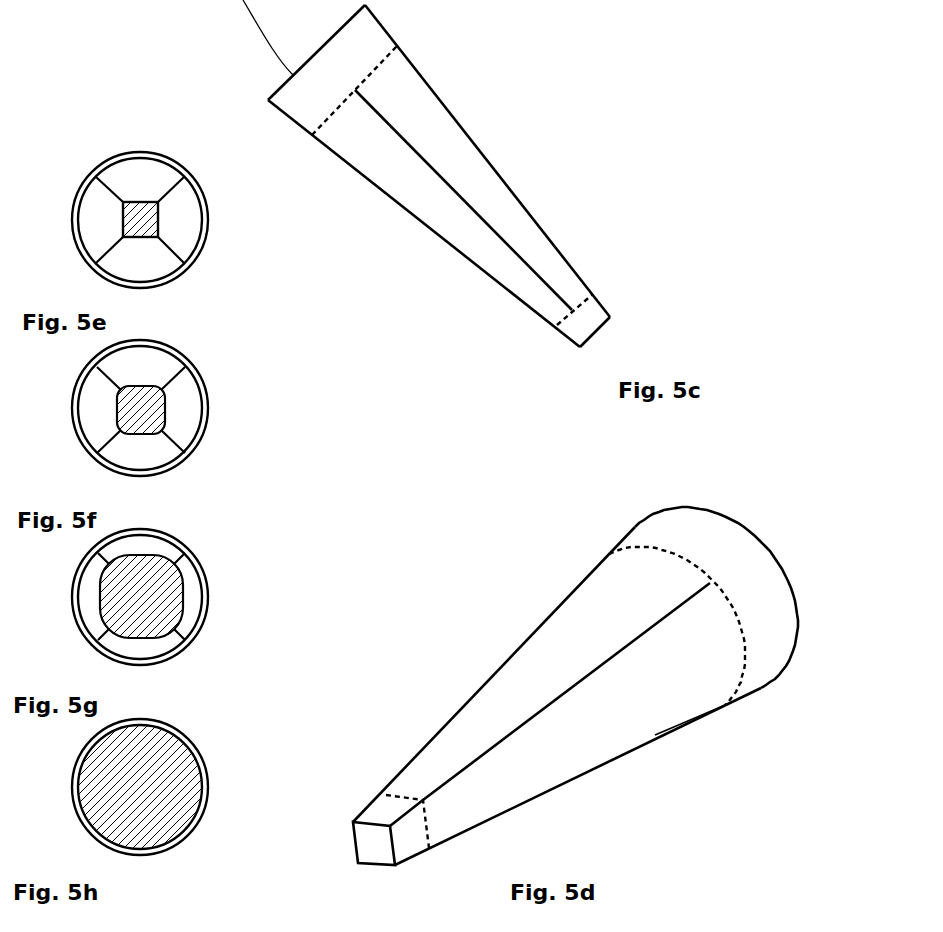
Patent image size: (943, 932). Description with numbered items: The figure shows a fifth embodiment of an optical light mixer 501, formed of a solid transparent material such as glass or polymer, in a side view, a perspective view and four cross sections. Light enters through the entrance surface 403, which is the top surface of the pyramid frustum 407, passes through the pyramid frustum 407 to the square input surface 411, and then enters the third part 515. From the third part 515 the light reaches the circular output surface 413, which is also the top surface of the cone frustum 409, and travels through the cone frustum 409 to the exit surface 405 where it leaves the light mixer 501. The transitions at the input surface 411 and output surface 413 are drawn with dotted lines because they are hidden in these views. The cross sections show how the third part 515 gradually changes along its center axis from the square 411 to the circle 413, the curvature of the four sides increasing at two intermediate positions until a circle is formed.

In FIG. 5C, the entrance surface 403 is at (610, 317).
In FIG. 5D, the entrance surface 403 is at (385, 835).
In FIG. 5D, the exit surface 405 is at (772, 553).
In FIG. 5C, the pyramid frustum 407 is at (538, 336).
In FIG. 5D, the pyramid frustum 407 is at (364, 776).
In FIG. 5C, the cone frustum 409 is at (262, 115).
In FIG. 5D, the cone frustum 409 is at (660, 500).
In FIG. 5C, the input surface 411 is at (593, 296).
In FIG. 5D, the input surface 411 is at (423, 827).
In FIG. 5E, the input surface 411 is at (140, 201).
In FIG. 5C, the output surface 413 is at (380, 68).
In FIG. 5D, the output surface 413 is at (743, 650).
In FIG. 5H, the output surface 413 is at (182, 735).
In FIG. 5C, the optical light mixer 501 is at (439, 176).
In FIG. 5D, the optical light mixer 501 is at (458, 541).
In FIG. 5C, the third part 515 is at (306, 153).
In FIG. 5D, the third part 515 is at (595, 550).